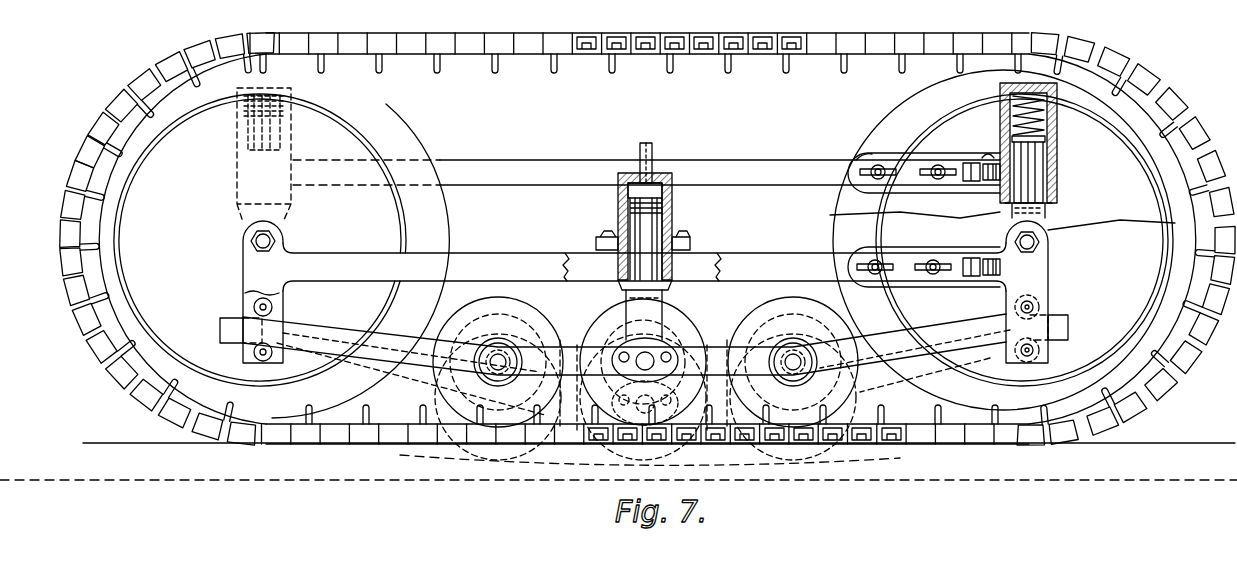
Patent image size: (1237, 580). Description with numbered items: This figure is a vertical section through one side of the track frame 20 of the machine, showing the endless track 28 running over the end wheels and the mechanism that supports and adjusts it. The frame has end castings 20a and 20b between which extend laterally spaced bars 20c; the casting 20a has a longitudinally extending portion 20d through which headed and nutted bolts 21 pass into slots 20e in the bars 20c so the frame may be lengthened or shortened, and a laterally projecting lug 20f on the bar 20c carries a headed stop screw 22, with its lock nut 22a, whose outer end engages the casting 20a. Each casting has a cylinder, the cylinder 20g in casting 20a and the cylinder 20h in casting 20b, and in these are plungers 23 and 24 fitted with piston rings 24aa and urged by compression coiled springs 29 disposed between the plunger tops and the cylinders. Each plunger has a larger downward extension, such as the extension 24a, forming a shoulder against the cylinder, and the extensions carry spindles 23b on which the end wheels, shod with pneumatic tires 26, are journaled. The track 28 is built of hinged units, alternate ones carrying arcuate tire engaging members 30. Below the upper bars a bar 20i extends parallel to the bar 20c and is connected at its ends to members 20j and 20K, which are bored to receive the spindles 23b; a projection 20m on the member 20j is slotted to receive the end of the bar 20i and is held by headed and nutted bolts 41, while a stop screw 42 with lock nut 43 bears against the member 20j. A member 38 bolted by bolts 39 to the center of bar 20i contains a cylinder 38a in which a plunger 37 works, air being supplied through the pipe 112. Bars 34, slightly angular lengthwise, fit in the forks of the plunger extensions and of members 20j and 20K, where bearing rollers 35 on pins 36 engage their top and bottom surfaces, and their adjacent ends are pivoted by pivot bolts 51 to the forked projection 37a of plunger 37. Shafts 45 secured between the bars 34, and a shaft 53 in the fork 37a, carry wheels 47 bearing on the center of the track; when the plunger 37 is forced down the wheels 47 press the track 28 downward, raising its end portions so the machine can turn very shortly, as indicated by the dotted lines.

The frame 20 is at (779, 154).
The casting 20a is at (1058, 172).
The casting 20b is at (246, 190).
The bar 20c is at (474, 168).
The longitudinally extending portion 20d is at (860, 160).
The slot 20e is at (872, 162).
The laterally projecting lug 20f is at (990, 158).
The cylinder 20g is at (1055, 98).
The cylinder 20h is at (388, 108).
The bar 20i is at (478, 262).
The member 20j is at (1048, 270).
The member 20K is at (246, 280).
The projection 20m is at (925, 288).
The headed and nutted bolt 21 is at (880, 182).
The stop screw 22 is at (938, 182).
The lock nut 22a is at (972, 185).
The plunger 23 is at (1035, 190).
The spindle 23b is at (1040, 244).
The plunger 24 is at (238, 200).
The extension 24a is at (248, 150).
The piston ring 24aa is at (1030, 148).
The pneumatic tire 26 is at (440, 208).
The endless track 28 is at (476, 67).
The compression coiled spring 29 is at (262, 102).
The tire engaging member 30 is at (552, 70).
The bar 34 is at (400, 330).
The bearing roller 35 is at (1035, 306).
The pin 36 is at (1037, 350).
The plunger 37 is at (650, 228).
The projection 37a is at (658, 312).
The member 38 is at (618, 242).
The cylinder 38a is at (660, 192).
The bolt 39 is at (690, 243).
The headed and nutted bolt 41 is at (878, 262).
The stop screw 42 is at (933, 262).
The lock nut 43 is at (968, 262).
The shaft 45 is at (498, 350).
The wheel 47 is at (615, 308).
The pivot bolt 51 is at (618, 355).
The shaft 53 is at (652, 352).
The pipe 112 is at (638, 160).